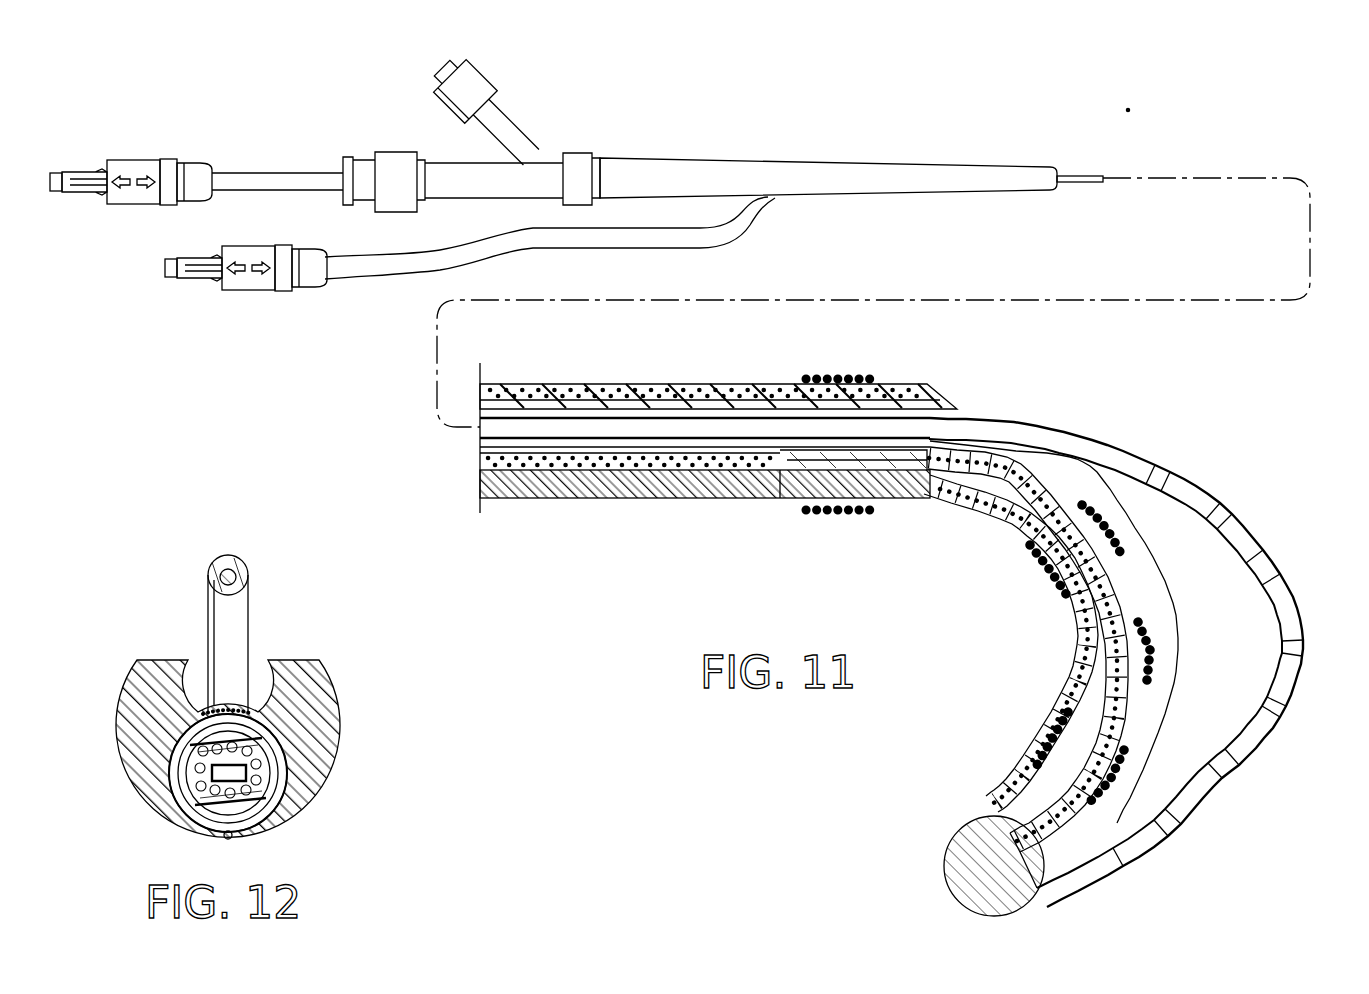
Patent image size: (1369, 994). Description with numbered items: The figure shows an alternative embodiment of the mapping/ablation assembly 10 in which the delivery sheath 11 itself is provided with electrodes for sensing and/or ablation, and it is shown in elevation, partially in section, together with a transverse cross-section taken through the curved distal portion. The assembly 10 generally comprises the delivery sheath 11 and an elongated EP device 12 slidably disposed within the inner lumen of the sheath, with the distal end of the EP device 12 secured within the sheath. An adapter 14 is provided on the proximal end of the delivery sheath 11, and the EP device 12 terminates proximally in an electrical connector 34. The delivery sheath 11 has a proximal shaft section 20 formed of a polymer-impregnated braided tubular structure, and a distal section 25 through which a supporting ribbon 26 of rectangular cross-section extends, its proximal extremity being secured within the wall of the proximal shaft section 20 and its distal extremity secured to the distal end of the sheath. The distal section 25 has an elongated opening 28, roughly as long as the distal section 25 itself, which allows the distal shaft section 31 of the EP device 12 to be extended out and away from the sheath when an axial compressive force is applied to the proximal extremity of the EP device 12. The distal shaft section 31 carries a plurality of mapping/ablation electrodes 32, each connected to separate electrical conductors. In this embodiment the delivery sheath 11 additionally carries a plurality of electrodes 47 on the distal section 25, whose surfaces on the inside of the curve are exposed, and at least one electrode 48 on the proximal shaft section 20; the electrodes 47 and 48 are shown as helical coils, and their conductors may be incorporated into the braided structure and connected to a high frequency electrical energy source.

In FIG. 11, the mapping/ablation assembly 10 is at (343, 373).
In FIG. 11, the delivery sheath 11 is at (958, 165).
In FIG. 11, the EP device 12 is at (258, 173).
In FIG. 12, the EP device 12 is at (252, 632).
In FIG. 11, the adapter 14 is at (470, 167).
In FIG. 11, the proximal shaft section 20 is at (555, 500).
In FIG. 11, the distal section 25 is at (1080, 637).
In FIG. 12, the distal section 25 is at (335, 705).
In FIG. 11, the supporting ribbon 26 is at (1110, 712).
In FIG. 12, the supporting ribbon 26 is at (258, 782).
In FIG. 11, the elongated opening 28 is at (1170, 641).
In FIG. 12, the elongated opening 28 is at (203, 672).
In FIG. 11, the distal shaft section 31 is at (1297, 673).
In FIG. 11, the mapping/ablation electrodes 32 is at (1193, 492).
In FIG. 11, the electrical connector 34 is at (132, 161).
In FIG. 11, the electrodes 47 is at (1140, 553).
In FIG. 12, the electrodes 47 is at (193, 820).
In FIG. 11, the electrode 48 is at (866, 378).